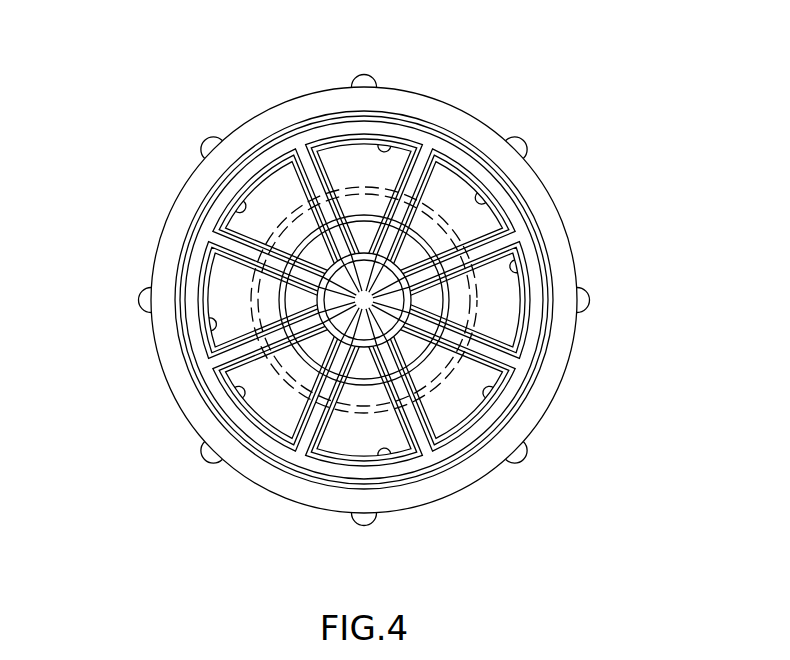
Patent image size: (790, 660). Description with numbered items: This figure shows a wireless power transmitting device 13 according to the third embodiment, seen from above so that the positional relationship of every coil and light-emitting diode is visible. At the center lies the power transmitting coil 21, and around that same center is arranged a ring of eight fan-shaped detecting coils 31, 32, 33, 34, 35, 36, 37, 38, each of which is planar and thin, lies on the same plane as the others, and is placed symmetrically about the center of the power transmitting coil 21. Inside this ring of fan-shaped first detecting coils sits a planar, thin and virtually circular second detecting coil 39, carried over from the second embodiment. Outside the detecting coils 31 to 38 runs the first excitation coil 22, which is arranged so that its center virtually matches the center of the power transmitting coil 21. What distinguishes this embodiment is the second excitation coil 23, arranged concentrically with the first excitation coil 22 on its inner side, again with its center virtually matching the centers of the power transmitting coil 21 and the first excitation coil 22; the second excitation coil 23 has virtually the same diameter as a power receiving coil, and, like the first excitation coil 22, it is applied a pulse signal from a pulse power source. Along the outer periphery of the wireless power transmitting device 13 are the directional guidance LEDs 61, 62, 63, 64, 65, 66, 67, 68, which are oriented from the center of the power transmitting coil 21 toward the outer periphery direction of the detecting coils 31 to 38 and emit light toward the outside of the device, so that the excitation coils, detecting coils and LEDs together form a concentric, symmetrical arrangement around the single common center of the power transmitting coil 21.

The wireless power transmitting device 13 is at (533, 91).
The power transmitting coil 21 is at (478, 317).
The first excitation coil 22 is at (540, 385).
The second excitation coil 23 is at (318, 372).
The detecting coil 31 is at (387, 144).
The detecting coil 32 is at (482, 198).
The detecting coil 33 is at (519, 265).
The detecting coil 34 is at (491, 397).
The detecting coil 35 is at (391, 453).
The detecting coil 36 is at (237, 397).
The detecting coil 37 is at (211, 325).
The detecting coil 38 is at (237, 205).
The detecting coil 39 is at (422, 352).
The directional guidance LED 61 is at (362, 526).
The directional guidance LED 62 is at (204, 460).
The directional guidance LED 63 is at (139, 300).
The directional guidance LED 64 is at (204, 140).
The directional guidance LED 65 is at (370, 76).
The directional guidance LED 66 is at (523, 141).
The directional guidance LED 67 is at (590, 300).
The directional guidance LED 68 is at (524, 460).